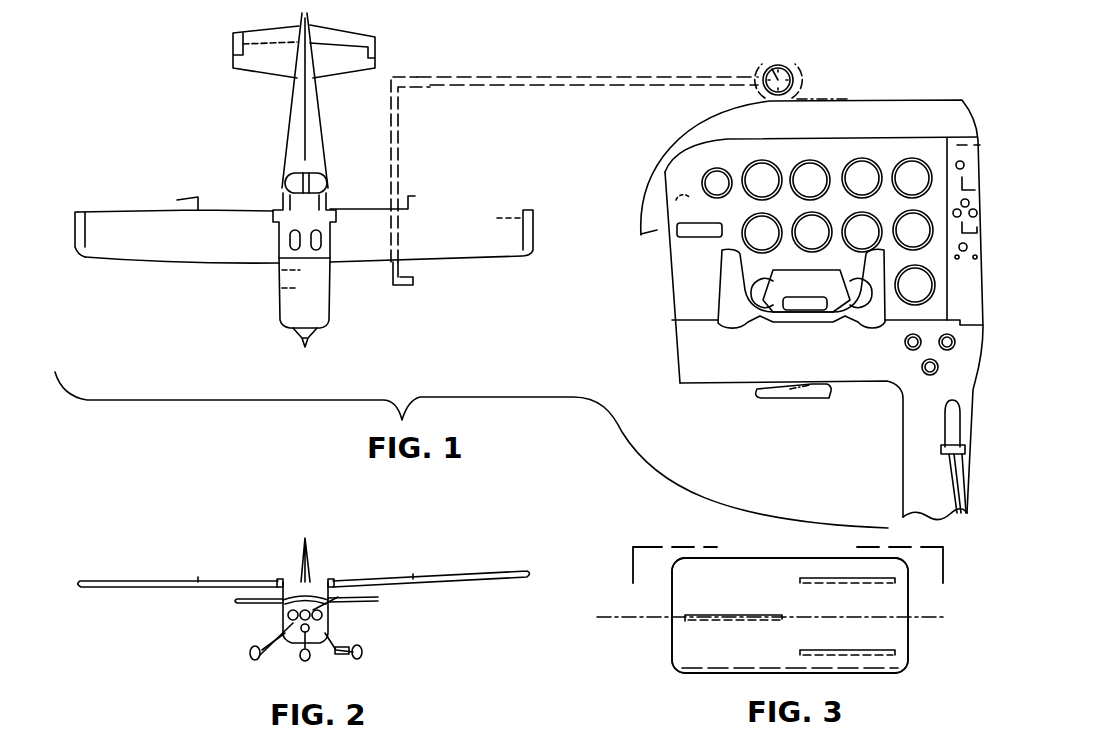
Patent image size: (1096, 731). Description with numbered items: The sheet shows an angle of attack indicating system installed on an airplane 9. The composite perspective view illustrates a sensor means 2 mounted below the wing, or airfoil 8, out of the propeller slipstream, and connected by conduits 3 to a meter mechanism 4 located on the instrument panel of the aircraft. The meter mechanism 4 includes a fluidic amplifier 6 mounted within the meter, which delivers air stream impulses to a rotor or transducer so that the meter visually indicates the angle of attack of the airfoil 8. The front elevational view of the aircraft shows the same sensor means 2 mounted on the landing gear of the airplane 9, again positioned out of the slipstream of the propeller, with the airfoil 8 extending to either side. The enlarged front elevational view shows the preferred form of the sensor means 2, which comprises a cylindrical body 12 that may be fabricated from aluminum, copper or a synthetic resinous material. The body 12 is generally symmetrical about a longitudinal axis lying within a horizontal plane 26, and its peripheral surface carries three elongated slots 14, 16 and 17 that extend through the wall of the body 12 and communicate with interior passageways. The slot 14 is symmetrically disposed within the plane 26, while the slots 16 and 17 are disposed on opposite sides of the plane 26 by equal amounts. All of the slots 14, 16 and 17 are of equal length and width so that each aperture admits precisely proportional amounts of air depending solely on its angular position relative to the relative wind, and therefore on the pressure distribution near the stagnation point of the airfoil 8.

In FIG. 1, the sensor means 2 is at (402, 300).
In FIG. 2, the sensor means 2 is at (343, 657).
In FIG. 3, the sensor means 2 is at (695, 675).
In FIG. 1, the conduits 3 is at (542, 88).
In FIG. 1, the meter mechanism 4 is at (800, 80).
In FIG. 3, the meter mechanism 4 is at (783, 567).
In FIG. 1, the fluidic amplifier 6 is at (779, 67).
In FIG. 1, the airfoil 8 is at (490, 248).
In FIG. 2, the airfoil 8 is at (379, 576).
In FIG. 1, the airplane 9 is at (287, 167).
In FIG. 2, the airplane 9 is at (294, 576).
In FIG. 3, the cylindrical body 12 is at (895, 632).
In FIG. 3, the slot 14 is at (717, 614).
In FIG. 3, the slot 16 is at (820, 582).
In FIG. 3, the slot 17 is at (835, 648).
In FIG. 3, the horizontal plane 26 is at (613, 617).